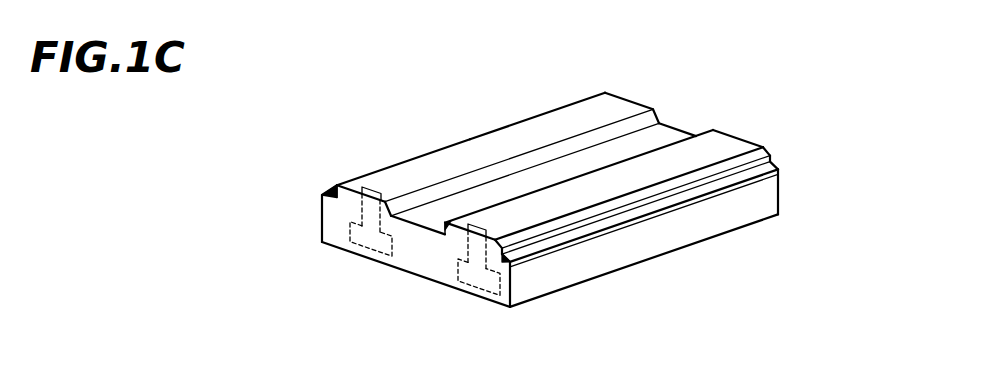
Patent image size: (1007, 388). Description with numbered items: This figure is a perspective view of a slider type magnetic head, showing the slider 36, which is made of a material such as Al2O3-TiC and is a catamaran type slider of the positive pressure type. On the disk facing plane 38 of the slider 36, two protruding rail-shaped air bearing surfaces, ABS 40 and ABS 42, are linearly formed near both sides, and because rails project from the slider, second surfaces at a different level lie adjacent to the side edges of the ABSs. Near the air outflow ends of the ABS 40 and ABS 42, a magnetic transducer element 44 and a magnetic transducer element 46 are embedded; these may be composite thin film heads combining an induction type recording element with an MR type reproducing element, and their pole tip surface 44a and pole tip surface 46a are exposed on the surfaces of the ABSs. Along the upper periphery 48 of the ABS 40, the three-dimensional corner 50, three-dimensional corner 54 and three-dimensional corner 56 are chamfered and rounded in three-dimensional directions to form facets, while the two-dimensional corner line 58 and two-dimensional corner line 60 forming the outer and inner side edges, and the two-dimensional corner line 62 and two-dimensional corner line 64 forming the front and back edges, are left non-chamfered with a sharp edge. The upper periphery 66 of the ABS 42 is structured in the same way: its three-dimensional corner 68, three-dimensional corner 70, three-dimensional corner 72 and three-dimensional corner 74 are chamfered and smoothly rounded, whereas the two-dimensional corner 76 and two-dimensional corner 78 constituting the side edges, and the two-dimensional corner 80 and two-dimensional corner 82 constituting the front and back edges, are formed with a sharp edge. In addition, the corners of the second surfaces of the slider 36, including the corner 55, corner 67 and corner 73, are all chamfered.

The slider 36 is at (758, 72).
The disk facing plane 38 is at (598, 128).
The ABS 40 is at (520, 137).
The ABS 42 is at (690, 157).
The magnetic transducer element 44 is at (355, 238).
The pole tip surface 44a is at (374, 187).
The magnetic transducer element 46 is at (464, 280).
The pole tip surface 46a is at (493, 243).
The upper periphery 48 is at (436, 151).
The three-dimensional corner 50 is at (600, 160).
The three-dimensional corner 54 is at (657, 113).
The corner of the second surfaces 55 is at (322, 193).
The three-dimensional corner 56 is at (337, 183).
The two-dimensional corner line 58 is at (470, 140).
The two-dimensional corner line 60 is at (573, 135).
The two-dimensional corner line 62 is at (642, 103).
The two-dimensional corner line 64 is at (320, 233).
The upper periphery 66 is at (690, 189).
The corner of the second surfaces 67 is at (777, 170).
The three-dimensional corner 68 is at (771, 155).
The three-dimensional corner 70 is at (720, 130).
The three-dimensional corner 72 is at (423, 228).
The corner of the second surfaces 73 is at (513, 275).
The three-dimensional corner 74 is at (511, 264).
The two-dimensional corner 76 is at (607, 210).
The two-dimensional corner 78 is at (683, 203).
The two-dimensional corner 80 is at (747, 137).
The two-dimensional corner 82 is at (455, 265).